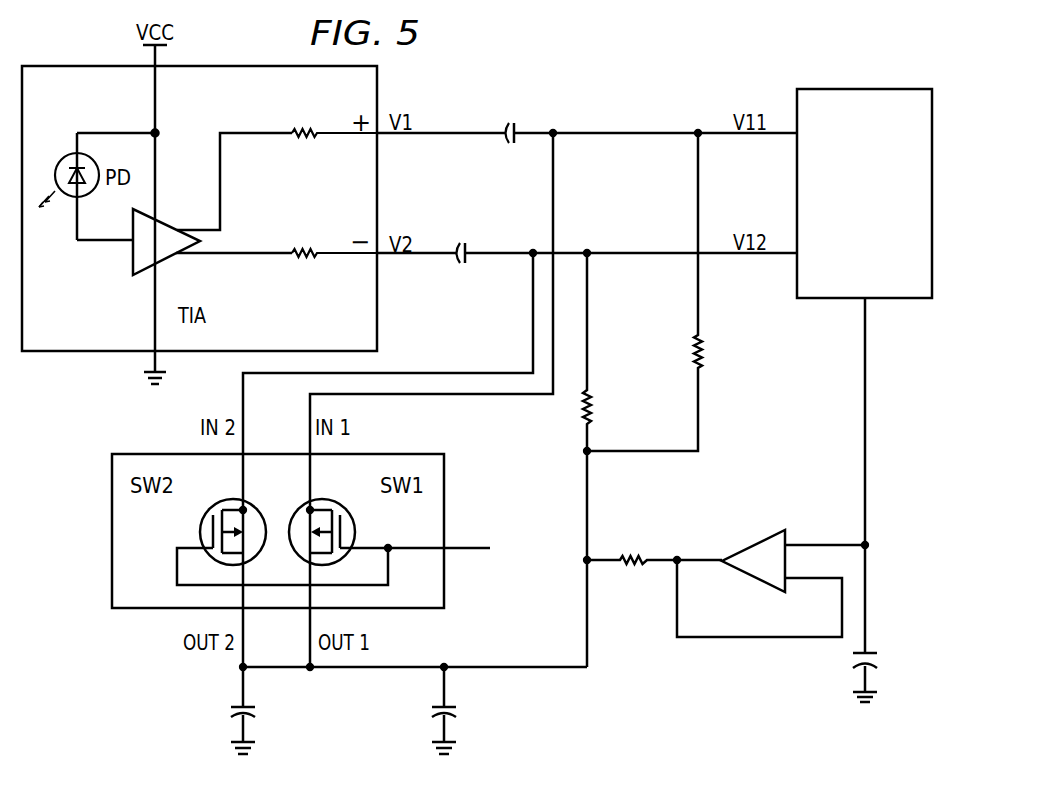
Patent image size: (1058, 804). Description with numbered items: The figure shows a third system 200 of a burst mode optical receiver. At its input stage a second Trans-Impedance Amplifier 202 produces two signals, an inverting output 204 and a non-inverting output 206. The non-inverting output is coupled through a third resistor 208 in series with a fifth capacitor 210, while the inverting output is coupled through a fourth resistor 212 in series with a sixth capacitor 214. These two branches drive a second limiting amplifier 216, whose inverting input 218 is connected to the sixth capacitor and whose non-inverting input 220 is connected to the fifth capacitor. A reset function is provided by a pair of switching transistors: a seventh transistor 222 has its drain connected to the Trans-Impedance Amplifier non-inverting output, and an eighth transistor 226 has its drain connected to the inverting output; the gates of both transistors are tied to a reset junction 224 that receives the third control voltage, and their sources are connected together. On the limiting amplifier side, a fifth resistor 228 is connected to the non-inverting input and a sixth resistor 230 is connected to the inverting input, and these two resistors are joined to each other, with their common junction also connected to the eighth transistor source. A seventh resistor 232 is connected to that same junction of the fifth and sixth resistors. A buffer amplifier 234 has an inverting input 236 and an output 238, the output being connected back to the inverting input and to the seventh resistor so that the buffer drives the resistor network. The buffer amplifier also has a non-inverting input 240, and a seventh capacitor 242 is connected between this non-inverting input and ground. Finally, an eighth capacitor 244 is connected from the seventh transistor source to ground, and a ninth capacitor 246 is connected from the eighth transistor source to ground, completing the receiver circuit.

The third system 200 is at (728, 52).
The second Trans-Impedance Amplifier 202 is at (171, 262).
The inverting output 204 is at (238, 255).
The non-inverting output 206 is at (245, 134).
The third resistor 208 is at (305, 135).
The fifth capacitor 210 is at (512, 142).
The fourth resistor 212 is at (302, 256).
The sixth capacitor 214 is at (462, 264).
The second limiting amplifier 216 is at (874, 89).
The inverting input 218 is at (645, 253).
The non-inverting input 220 is at (645, 133).
The seventh transistor 222 is at (357, 523).
The reset junction 224 is at (468, 550).
The eighth transistor 226 is at (200, 526).
The fifth resistor 228 is at (692, 352).
The sixth resistor 230 is at (583, 412).
The seventh resistor 232 is at (632, 565).
The buffer amplifier 234 is at (750, 546).
The inverting input 236 is at (718, 639).
The output 238 is at (700, 563).
The non-inverting input 240 is at (895, 522).
The seventh capacitor 242 is at (855, 664).
The eighth capacitor 244 is at (232, 712).
The ninth capacitor 246 is at (432, 712).